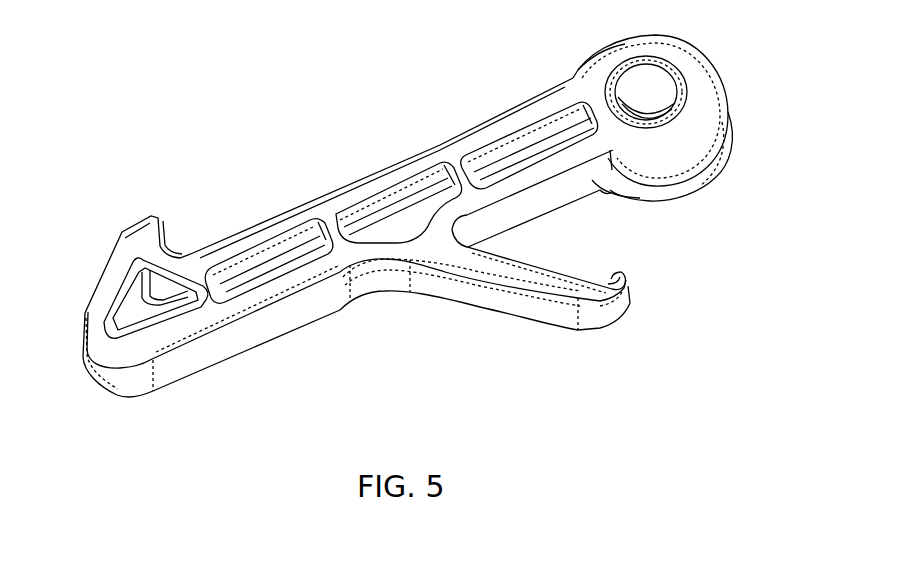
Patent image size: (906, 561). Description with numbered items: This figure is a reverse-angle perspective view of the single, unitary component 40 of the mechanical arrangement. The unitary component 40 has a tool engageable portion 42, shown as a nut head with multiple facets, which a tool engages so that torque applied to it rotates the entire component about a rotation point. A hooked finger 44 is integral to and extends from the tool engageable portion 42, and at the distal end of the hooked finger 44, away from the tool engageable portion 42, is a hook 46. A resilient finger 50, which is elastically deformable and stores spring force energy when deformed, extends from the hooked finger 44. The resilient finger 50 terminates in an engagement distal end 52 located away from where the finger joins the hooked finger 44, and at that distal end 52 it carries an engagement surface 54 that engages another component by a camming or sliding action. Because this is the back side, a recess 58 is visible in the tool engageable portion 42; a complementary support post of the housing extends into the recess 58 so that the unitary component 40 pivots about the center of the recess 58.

The single, unitary component 40 is at (331, 90).
The tool engageable portion 42 is at (680, 197).
The hooked finger 44 is at (240, 337).
The hook 46 is at (138, 242).
The resilient finger 50 is at (540, 313).
The engagement distal end 52 is at (620, 273).
The engagement surface 54 is at (610, 315).
The recess 58 is at (657, 82).